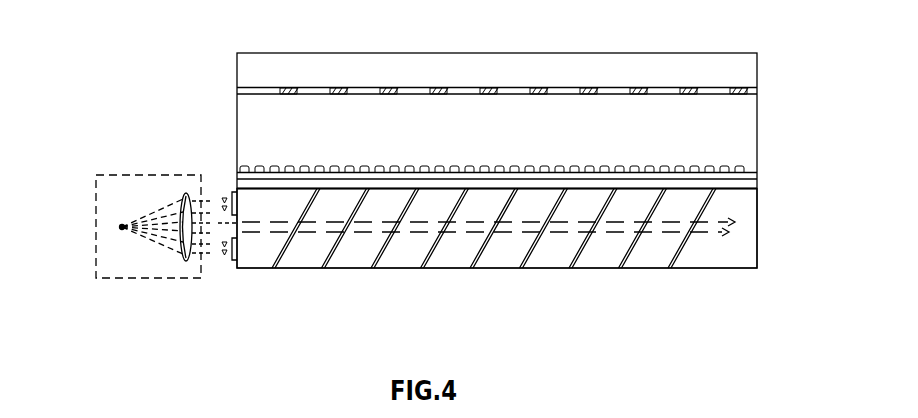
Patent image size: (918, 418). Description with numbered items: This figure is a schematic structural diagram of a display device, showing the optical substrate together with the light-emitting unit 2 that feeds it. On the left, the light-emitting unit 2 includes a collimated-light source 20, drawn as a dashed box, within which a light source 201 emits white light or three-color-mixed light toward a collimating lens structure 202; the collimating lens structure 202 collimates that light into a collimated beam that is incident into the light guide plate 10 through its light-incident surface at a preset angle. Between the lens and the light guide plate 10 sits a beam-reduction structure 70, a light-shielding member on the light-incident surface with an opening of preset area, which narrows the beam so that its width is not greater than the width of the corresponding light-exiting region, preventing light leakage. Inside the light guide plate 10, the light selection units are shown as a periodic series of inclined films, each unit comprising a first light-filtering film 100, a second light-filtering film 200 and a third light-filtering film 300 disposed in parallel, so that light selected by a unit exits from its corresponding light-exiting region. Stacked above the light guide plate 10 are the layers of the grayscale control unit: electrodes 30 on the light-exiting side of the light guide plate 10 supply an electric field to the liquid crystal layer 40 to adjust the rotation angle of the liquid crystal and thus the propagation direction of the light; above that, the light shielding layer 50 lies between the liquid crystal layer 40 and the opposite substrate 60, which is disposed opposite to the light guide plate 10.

The light-emitting unit 2 is at (197, 127).
The light guide plate 10 is at (757, 247).
The collimated-light source 20 is at (148, 280).
The electrodes 30 is at (757, 190).
The liquid crystal layer 40 is at (757, 120).
The light shielding layer 50 is at (757, 88).
The opposite substrate 60 is at (730, 53).
The beam-reduction structure 70 is at (230, 195).
The first light-filtering film 100 is at (280, 252).
The second light-filtering film 200 is at (333, 252).
The light source 201 is at (122, 227).
The collimating lens structure 202 is at (187, 198).
The third light-filtering film 300 is at (385, 243).